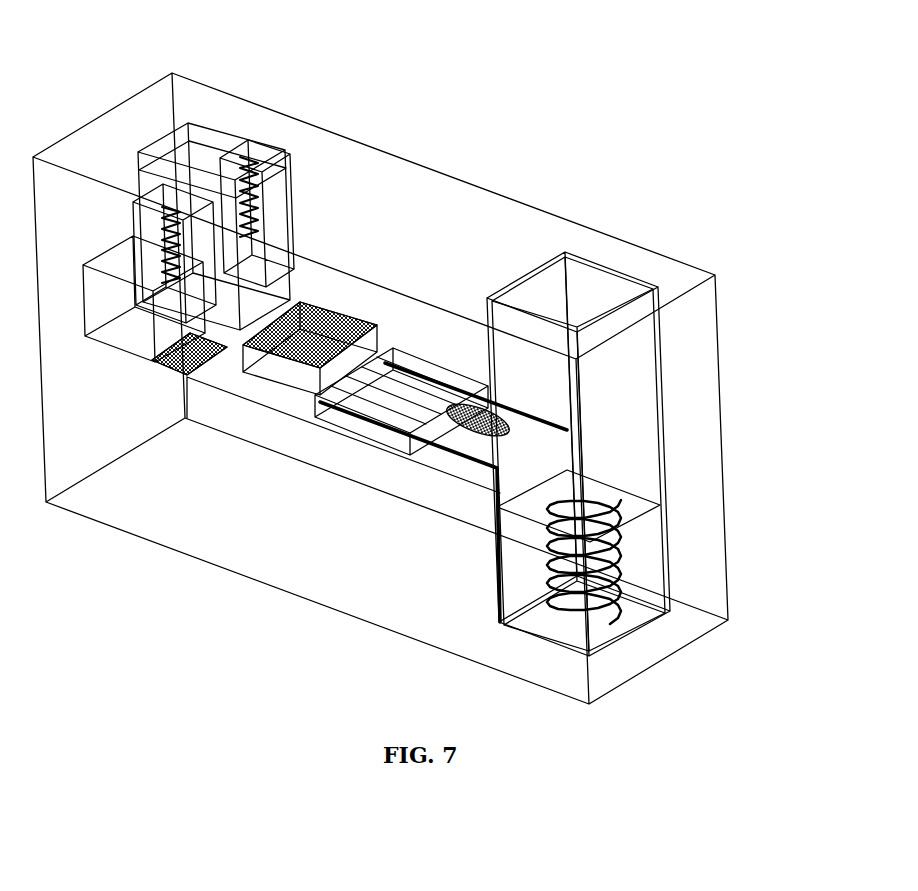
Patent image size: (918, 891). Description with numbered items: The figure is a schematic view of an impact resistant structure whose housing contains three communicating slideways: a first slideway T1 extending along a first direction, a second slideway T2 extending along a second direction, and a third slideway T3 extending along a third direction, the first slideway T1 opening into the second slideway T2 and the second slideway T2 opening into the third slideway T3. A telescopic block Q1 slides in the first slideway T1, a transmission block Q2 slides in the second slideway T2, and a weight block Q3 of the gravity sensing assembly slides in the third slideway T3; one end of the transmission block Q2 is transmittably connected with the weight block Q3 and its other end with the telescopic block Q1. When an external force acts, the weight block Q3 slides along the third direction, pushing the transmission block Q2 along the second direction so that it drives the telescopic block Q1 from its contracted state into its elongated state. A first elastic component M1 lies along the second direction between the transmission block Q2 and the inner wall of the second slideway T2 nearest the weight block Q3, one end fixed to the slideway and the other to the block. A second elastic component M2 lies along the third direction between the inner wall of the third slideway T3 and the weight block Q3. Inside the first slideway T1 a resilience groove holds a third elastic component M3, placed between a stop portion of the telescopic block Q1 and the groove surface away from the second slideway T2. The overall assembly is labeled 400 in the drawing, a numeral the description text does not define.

The telescopic block Q1 is at (197, 157).
The first slideway T1 is at (223, 148).
The third elastic component M3 is at (257, 187).
The second slideway T2 is at (334, 306).
The connector assembly 400 is at (410, 365).
The weight block Q3 is at (640, 392).
The third slideway T3 is at (683, 445).
The second elastic component M2 is at (628, 563).
The transmission block Q2 is at (233, 377).
The first elastic component M1 is at (462, 442).